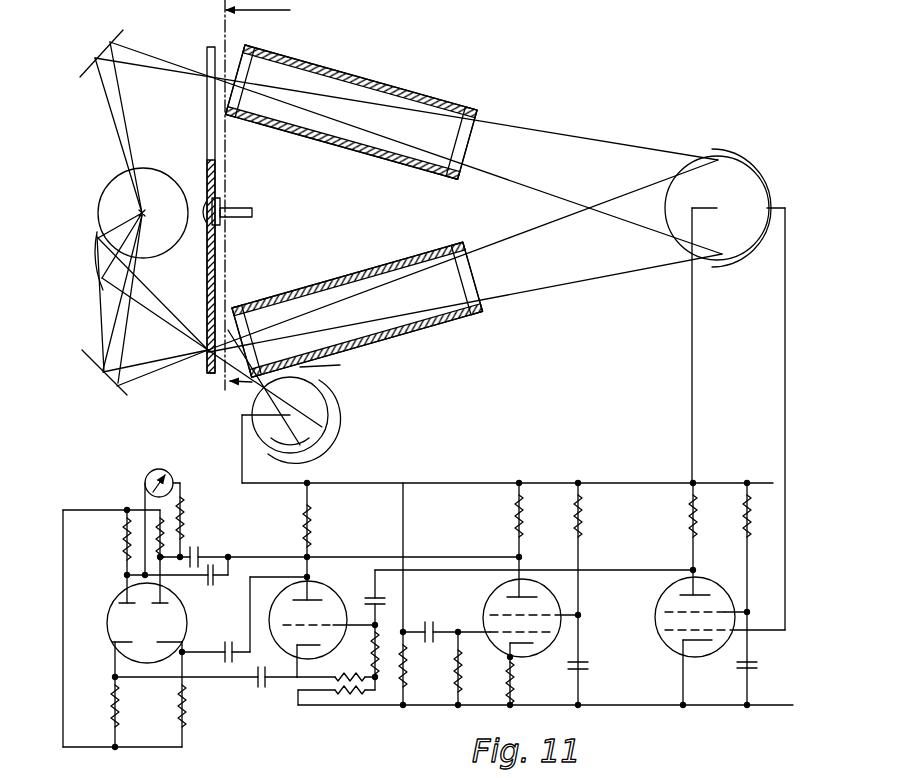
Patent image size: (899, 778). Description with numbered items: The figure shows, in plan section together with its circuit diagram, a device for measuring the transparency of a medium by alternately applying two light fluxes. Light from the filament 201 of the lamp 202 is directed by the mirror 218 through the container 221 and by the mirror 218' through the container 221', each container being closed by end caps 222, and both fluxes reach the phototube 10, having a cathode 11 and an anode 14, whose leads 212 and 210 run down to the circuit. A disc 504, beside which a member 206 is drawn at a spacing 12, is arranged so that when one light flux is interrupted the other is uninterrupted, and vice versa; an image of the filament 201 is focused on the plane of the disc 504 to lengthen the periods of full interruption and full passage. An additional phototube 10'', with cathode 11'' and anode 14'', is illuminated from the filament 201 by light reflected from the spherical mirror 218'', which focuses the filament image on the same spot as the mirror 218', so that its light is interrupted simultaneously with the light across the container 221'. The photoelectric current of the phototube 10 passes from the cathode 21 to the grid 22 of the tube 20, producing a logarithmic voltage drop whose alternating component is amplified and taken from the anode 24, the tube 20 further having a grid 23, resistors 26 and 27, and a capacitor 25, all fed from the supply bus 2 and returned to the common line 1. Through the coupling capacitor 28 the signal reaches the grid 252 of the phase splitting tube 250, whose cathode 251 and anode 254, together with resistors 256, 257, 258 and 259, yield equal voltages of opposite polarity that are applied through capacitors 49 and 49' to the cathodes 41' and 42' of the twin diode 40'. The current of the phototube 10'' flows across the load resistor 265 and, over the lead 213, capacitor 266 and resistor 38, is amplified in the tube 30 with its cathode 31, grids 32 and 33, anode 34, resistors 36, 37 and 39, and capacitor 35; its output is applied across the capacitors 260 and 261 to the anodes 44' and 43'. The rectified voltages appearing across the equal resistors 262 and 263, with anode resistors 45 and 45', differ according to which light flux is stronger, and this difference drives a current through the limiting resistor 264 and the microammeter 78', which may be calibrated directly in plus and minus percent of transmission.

The ground line 1 is at (792, 707).
The supply bus 2 is at (762, 481).
The phototube 10 is at (731, 208).
The photocell cathode 11 is at (760, 208).
The photocell lead 14 is at (675, 209).
The spacing dimension 12 is at (295, 191).
The additional phototube 10'' is at (310, 415).
The cathode 11'' is at (319, 421).
The anode 14'' is at (254, 404).
The tube 20 is at (685, 667).
The cathode 21 is at (684, 664).
The grid 22 is at (738, 631).
The screen grid 23 is at (738, 616).
The anode 24 is at (696, 568).
The capacitor 25 is at (757, 663).
The resistor 26 is at (743, 526).
The load resistor 27 is at (693, 521).
The coupling capacitor 28 is at (392, 598).
The tube 30 is at (521, 662).
The cathode 31 is at (506, 658).
The control grid 32 is at (477, 633).
The screen grid 33 is at (560, 612).
The anode 34 is at (519, 579).
The capacitor 35 is at (590, 670).
The resistor 36 is at (573, 526).
The load resistor 37 is at (515, 520).
The grid leak resistor 38 is at (455, 681).
The cathode resistor 39 is at (507, 693).
The twin diode 40' is at (131, 623).
The cathode 41' is at (110, 694).
The cathode 42' is at (191, 687).
The anode 43' is at (178, 590).
The anode 44' is at (116, 589).
The anode resistor 45 is at (99, 700).
The anode resistor 45' is at (164, 702).
The coupling capacitor 49 is at (238, 643).
The coupling capacitor 49' is at (269, 685).
The microammeter 78' is at (162, 473).
The filament 201 is at (138, 212).
The light source envelope 202 is at (121, 178).
The slit member 206 is at (253, 212).
The lead 210 is at (785, 396).
The lead 212 is at (692, 392).
The lead 213 is at (238, 466).
The mirror 218 is at (96, 53).
The mirror 218' is at (101, 372).
The spherical mirror 218'' is at (83, 261).
The container 221 is at (351, 112).
The container 221' is at (357, 309).
The tube end cap 222 is at (262, 43).
The phase splitting tube 250 is at (273, 606).
The cathode 251 is at (296, 675).
The grid 252 is at (345, 623).
The anode 254 is at (307, 599).
The load resistor 256 is at (304, 528).
The resistor 257 is at (382, 661).
The resistor 258 is at (333, 678).
The resistor 259 is at (342, 693).
The capacitor 260 is at (196, 548).
The capacitor 261 is at (213, 585).
The resistor 262 is at (124, 522).
The resistor 263 is at (157, 516).
The limiting resistor 264 is at (185, 526).
The load resistor 265 is at (405, 666).
The capacitor 266 is at (430, 628).
The disc 504 is at (217, 268).